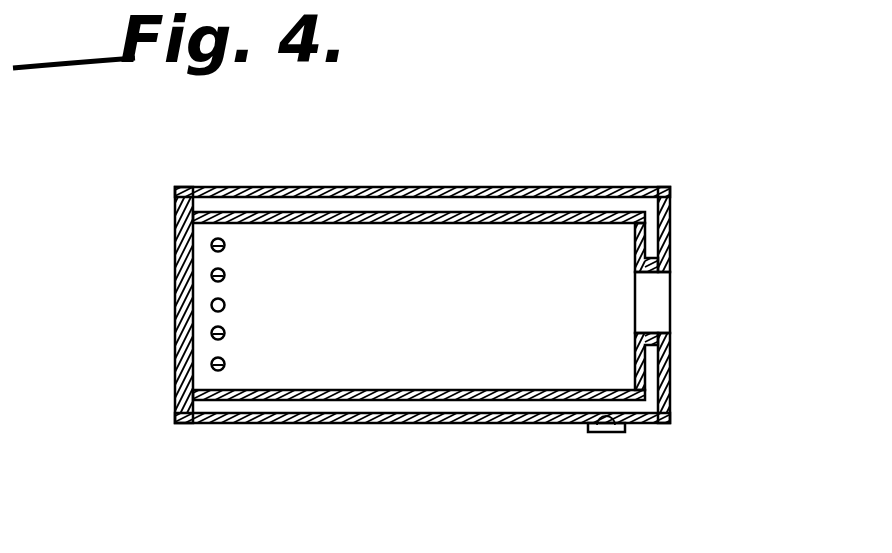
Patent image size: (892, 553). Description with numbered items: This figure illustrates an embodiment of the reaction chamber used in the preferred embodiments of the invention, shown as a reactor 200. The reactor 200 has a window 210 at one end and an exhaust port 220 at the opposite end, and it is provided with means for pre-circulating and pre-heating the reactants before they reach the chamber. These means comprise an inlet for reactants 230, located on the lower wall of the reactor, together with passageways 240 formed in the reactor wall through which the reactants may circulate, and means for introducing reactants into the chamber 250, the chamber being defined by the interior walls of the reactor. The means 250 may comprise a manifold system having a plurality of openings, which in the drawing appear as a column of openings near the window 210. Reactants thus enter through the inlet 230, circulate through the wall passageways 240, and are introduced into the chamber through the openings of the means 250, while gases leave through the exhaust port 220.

The reactor 200 is at (540, 184).
The window 210 is at (178, 303).
The exhaust port 220 is at (660, 297).
The inlet for reactants 230 is at (613, 432).
The passageway in the reactor wall 240 is at (322, 408).
The means for introducing reactants into the chamber 250 is at (232, 240).